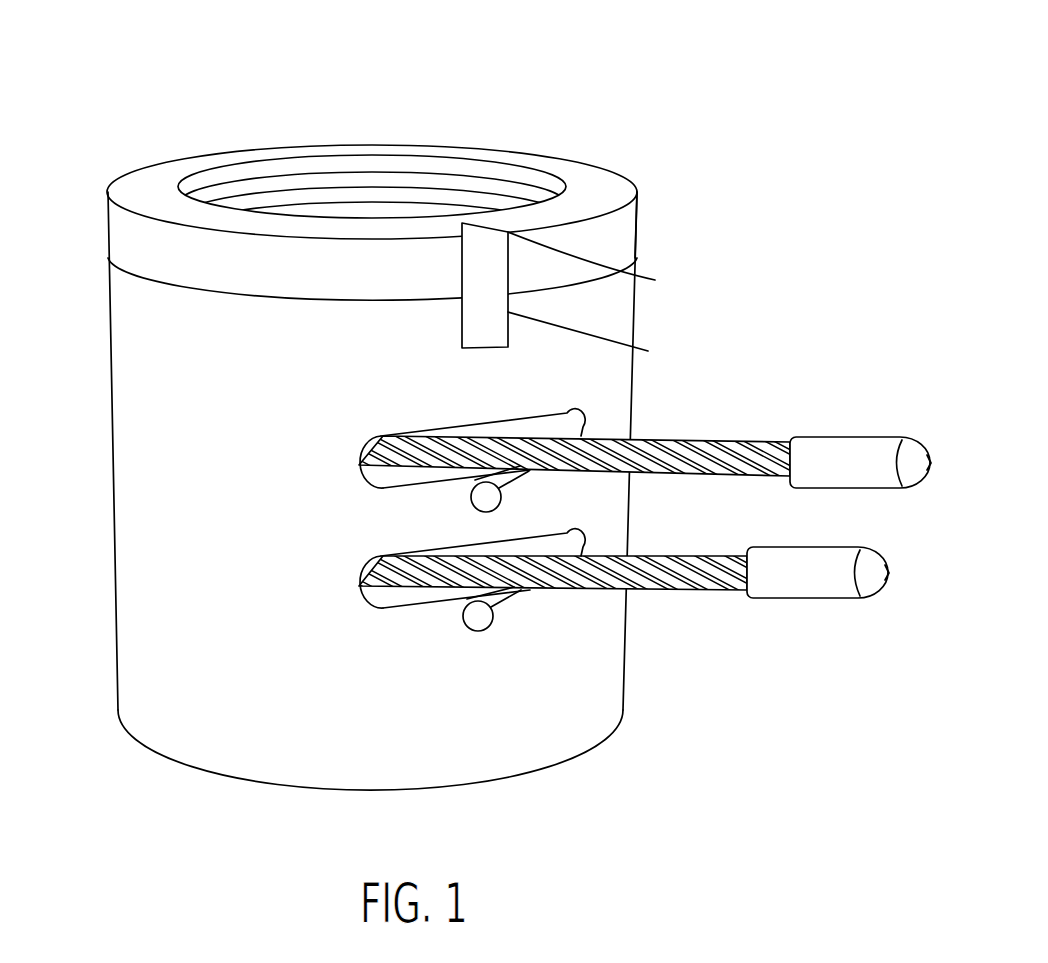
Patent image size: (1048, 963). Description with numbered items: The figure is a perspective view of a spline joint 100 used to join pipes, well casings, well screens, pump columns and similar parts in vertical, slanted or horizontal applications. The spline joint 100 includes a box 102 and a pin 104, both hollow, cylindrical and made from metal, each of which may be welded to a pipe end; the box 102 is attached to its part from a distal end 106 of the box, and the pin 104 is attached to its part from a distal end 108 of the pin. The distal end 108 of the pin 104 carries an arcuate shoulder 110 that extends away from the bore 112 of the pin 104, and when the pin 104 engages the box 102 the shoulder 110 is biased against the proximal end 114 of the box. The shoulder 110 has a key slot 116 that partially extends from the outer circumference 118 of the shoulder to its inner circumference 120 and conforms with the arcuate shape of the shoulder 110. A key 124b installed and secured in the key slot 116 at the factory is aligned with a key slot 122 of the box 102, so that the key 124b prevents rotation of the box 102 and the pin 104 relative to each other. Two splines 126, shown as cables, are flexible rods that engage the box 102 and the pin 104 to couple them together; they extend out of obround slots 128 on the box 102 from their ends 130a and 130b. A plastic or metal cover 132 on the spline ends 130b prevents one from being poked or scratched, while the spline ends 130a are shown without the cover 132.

The spline joint 100 is at (526, 418).
The box 102 is at (420, 513).
The pin 104 is at (385, 190).
The distal end of the box 106 is at (578, 752).
The distal end of the pin 108 is at (383, 159).
The shoulder 110 is at (155, 179).
The bore 112 is at (362, 200).
The proximal end of the box 114 is at (108, 258).
The key slot 116 is at (597, 264).
The outer circumference of the shoulder 118 is at (637, 202).
The inner circumference of the shoulder 120 is at (562, 190).
The key slot of the box 122 is at (592, 339).
The key 124b is at (480, 227).
The splines 126 is at (777, 442).
The slots 128 is at (583, 429).
The spline end 130a is at (473, 496).
The spline end 130b is at (931, 463).
The cover 132 is at (858, 437).